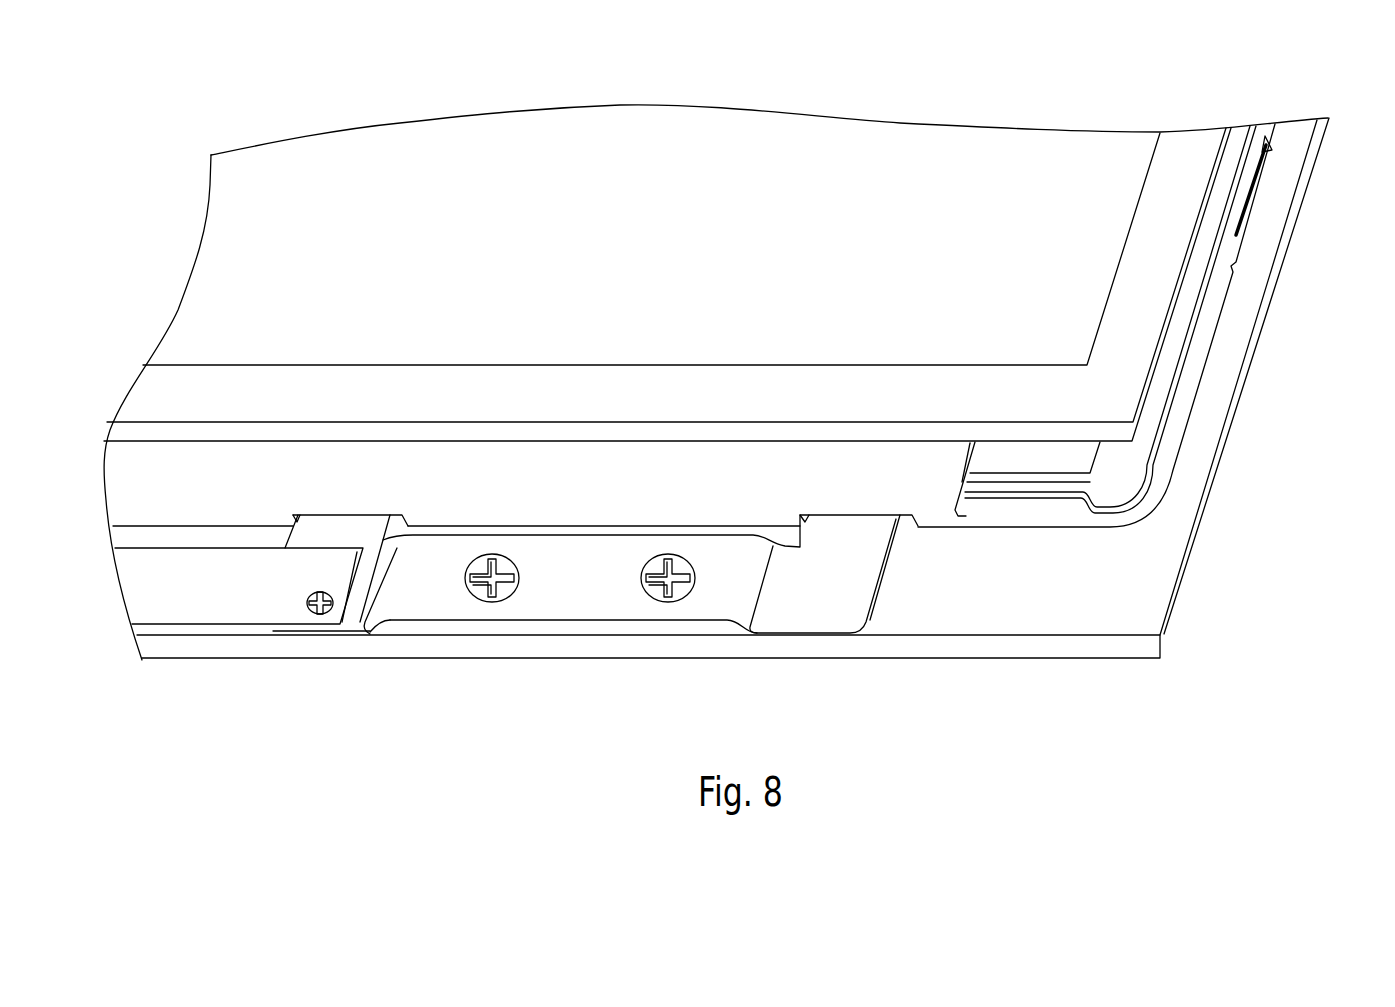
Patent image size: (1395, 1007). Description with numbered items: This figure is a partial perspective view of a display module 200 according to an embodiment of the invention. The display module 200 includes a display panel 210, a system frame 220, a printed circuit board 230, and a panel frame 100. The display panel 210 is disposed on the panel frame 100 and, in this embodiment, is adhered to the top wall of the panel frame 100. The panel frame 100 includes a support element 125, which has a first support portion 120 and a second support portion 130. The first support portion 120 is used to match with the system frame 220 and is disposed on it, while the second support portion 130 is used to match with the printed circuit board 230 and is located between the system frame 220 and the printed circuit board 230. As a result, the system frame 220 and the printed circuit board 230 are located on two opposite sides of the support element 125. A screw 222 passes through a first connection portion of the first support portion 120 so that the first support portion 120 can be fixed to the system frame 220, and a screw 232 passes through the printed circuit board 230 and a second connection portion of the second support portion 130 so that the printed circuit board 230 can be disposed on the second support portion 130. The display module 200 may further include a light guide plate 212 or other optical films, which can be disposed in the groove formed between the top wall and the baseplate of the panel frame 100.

The display module 200 is at (222, 74).
The display panel 210 is at (1140, 265).
The light guide plate 212 is at (1070, 465).
The system frame 220 is at (1145, 578).
The screw 222 is at (518, 590).
The printed circuit board 230 is at (218, 605).
The screw 232 is at (317, 613).
The second support portion 130 is at (357, 525).
The first support portion 120 is at (465, 603).
The support element 125 is at (601, 643).
The panel frame 100 is at (1202, 322).